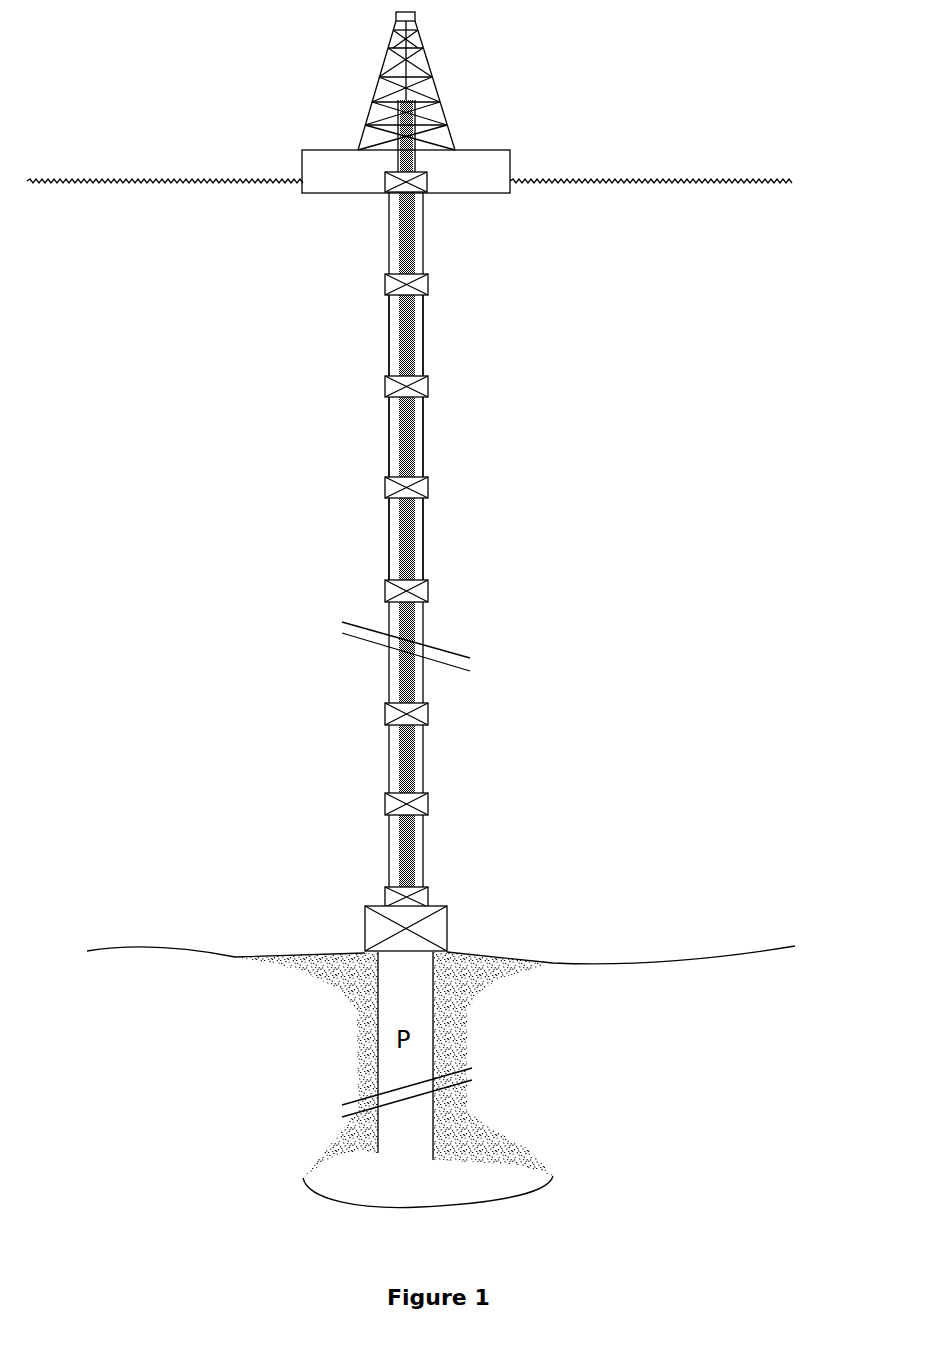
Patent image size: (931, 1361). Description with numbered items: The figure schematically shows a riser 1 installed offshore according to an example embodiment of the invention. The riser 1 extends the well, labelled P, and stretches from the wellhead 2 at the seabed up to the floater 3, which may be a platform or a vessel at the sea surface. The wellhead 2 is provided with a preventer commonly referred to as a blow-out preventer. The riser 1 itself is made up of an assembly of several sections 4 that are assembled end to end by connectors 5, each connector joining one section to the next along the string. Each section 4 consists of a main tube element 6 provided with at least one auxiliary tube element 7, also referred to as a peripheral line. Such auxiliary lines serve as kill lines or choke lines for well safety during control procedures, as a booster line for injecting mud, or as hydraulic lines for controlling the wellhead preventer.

The riser 1 is at (205, 287).
The wellhead 2 is at (449, 921).
The floater 3 is at (512, 168).
The section 4 is at (343, 587).
The connector 5 is at (440, 285).
The main tube element 6 is at (412, 546).
The auxiliary tube element 7 is at (424, 446).